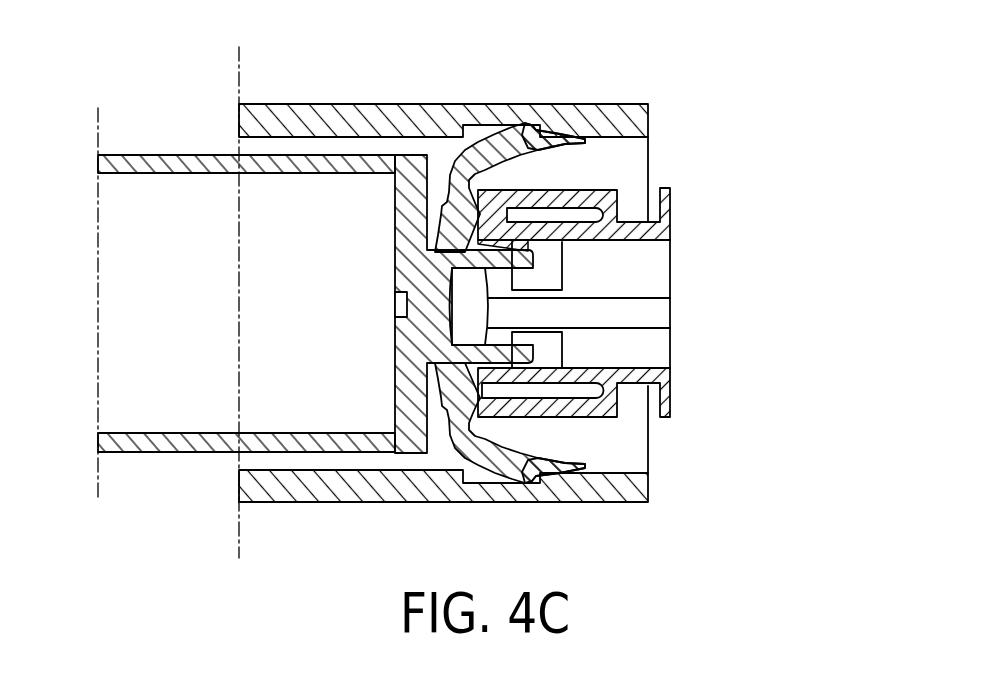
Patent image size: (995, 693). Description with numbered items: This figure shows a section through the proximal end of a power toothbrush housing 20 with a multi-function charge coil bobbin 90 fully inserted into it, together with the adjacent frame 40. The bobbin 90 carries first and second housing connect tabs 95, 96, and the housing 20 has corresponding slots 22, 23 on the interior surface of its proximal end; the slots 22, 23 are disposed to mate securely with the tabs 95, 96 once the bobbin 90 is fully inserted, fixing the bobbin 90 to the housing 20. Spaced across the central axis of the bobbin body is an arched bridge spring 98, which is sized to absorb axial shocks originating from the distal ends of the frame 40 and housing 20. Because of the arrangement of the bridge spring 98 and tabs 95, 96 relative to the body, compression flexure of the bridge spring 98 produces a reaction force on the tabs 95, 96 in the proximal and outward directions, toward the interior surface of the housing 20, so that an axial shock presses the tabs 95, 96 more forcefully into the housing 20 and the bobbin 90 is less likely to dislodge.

The housing 20 is at (311, 104).
The first slot 22 is at (480, 133).
The second slot 23 is at (478, 484).
The frame 40 is at (396, 248).
The bobbin 90 is at (662, 214).
The first housing connect tab 95 is at (523, 124).
The second housing connect tab 96 is at (527, 482).
The bridge spring 98 is at (402, 318).